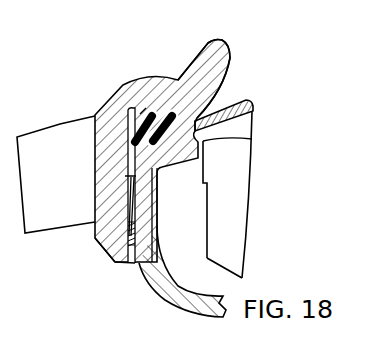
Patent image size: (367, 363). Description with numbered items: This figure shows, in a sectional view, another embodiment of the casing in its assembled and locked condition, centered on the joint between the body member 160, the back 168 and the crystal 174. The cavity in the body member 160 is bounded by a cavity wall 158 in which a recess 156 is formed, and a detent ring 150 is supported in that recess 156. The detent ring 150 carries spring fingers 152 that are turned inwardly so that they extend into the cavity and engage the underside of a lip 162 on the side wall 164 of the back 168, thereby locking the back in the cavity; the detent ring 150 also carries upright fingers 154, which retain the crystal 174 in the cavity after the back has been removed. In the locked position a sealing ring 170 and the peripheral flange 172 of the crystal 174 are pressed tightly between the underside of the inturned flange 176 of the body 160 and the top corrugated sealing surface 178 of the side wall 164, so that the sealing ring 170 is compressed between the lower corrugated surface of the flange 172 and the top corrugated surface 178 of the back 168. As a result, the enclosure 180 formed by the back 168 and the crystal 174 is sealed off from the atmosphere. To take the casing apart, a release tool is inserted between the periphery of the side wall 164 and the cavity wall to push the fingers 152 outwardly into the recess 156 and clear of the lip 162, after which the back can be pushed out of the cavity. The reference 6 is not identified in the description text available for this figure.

The connector body 6 is at (132, 111).
The detent ring 150 is at (148, 238).
The spring fingers 152 is at (157, 202).
The upright fingers 154 is at (128, 192).
The recess 156 is at (130, 239).
The cavity wall 158 is at (133, 167).
The body member 160 is at (102, 269).
The lip 162 is at (131, 152).
The side wall 164 is at (157, 242).
The back 168 is at (161, 297).
The sealing ring 170 is at (164, 108).
The peripheral flange 172 is at (145, 108).
The crystal 174 is at (217, 60).
The inturned flange 176 is at (150, 108).
The top corrugated sealing surface 178 is at (249, 139).
The enclosure 180 is at (180, 218).